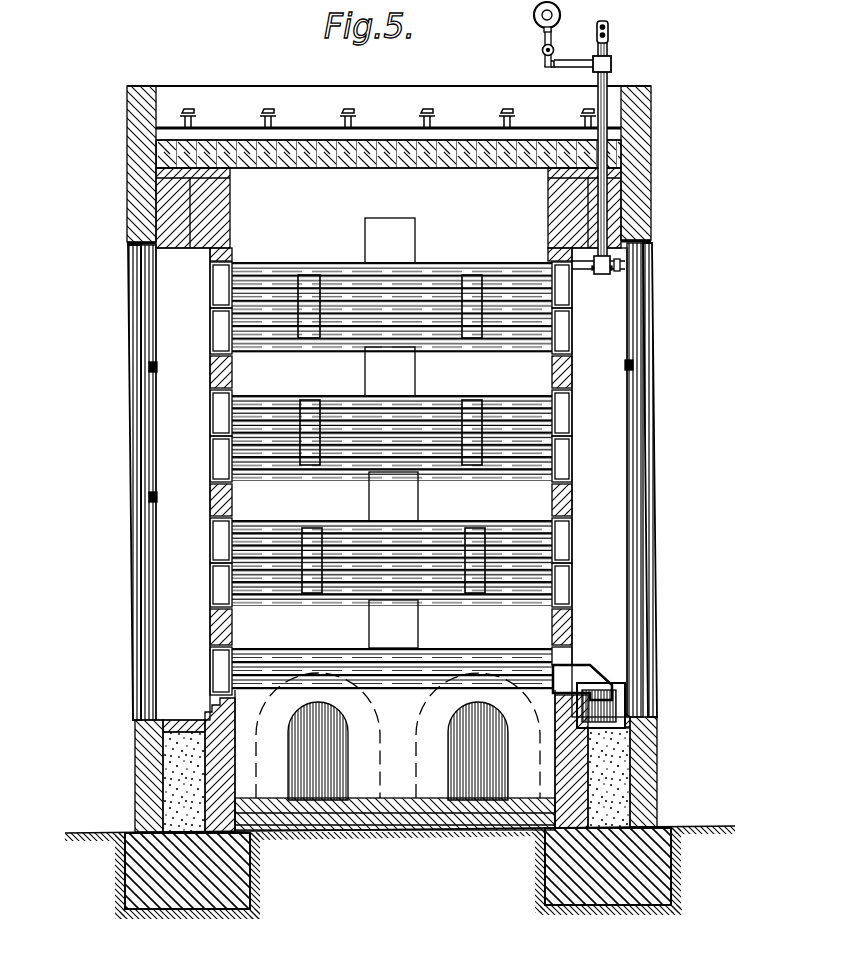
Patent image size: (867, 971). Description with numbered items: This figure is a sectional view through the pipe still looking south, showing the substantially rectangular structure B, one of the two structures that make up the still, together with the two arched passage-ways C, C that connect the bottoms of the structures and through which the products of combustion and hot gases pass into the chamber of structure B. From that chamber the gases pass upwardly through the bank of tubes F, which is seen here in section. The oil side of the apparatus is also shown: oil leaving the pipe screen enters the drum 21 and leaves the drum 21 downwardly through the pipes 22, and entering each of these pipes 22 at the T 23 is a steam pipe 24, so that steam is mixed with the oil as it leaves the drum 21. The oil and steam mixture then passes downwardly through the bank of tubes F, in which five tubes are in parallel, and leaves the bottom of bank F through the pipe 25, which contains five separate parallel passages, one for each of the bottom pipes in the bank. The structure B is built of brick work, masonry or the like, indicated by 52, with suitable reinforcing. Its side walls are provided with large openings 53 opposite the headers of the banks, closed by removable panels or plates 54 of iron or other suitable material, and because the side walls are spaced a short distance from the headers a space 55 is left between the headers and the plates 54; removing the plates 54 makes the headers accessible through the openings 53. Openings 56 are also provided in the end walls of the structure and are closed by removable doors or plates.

The drum 21 is at (560, 16).
The pipes 22 is at (606, 213).
The T 23 is at (612, 71).
The steam pipe 24 is at (609, 37).
The pipe 25 is at (600, 710).
The brick work 52 is at (646, 775).
The openings 53 is at (142, 420).
The panels 54 is at (152, 495).
The space 55 is at (186, 582).
The openings 56 is at (314, 284).
The rectangular structure B is at (217, 92).
The bank of tubes F is at (443, 274).
The arched passage-ways C is at (316, 788).